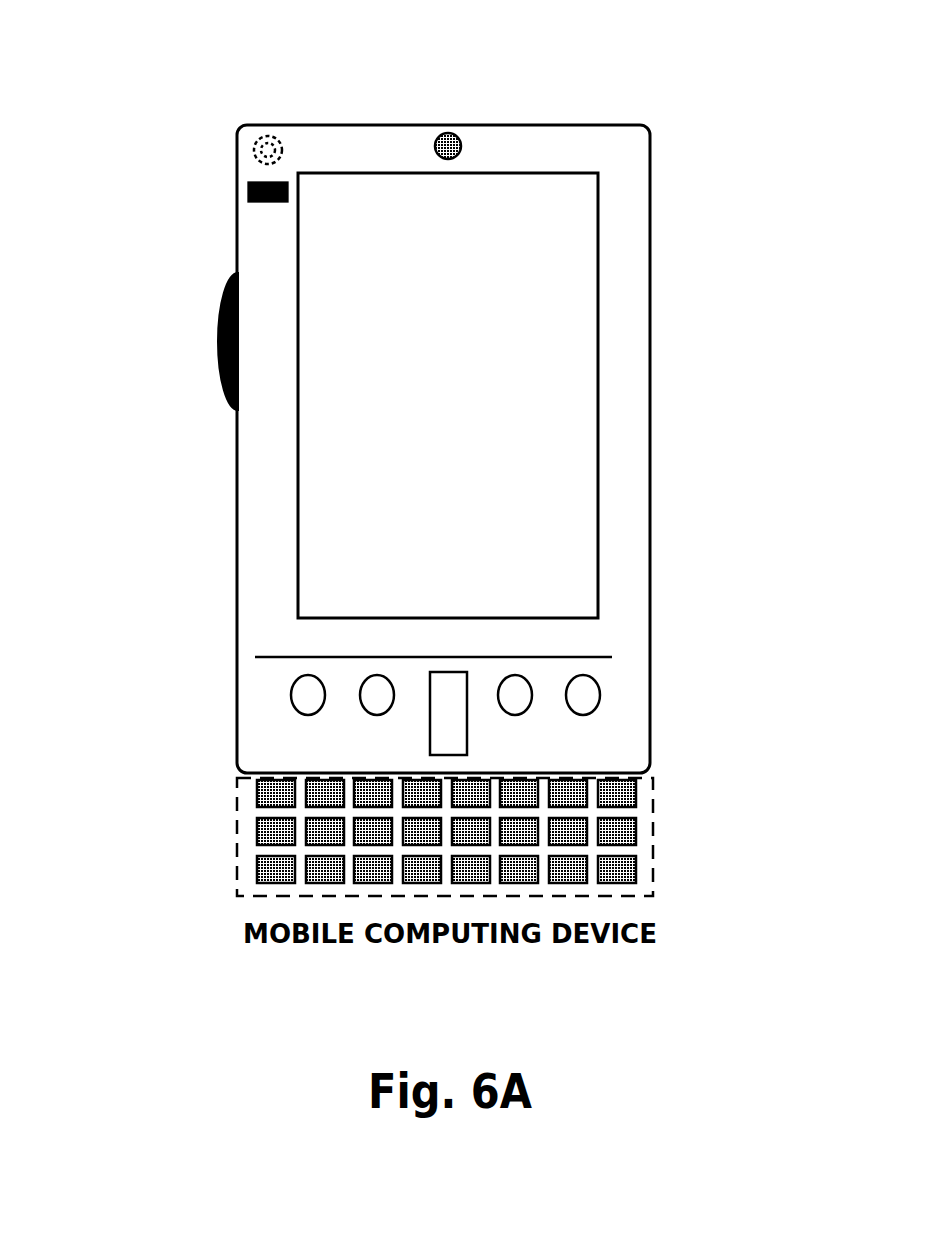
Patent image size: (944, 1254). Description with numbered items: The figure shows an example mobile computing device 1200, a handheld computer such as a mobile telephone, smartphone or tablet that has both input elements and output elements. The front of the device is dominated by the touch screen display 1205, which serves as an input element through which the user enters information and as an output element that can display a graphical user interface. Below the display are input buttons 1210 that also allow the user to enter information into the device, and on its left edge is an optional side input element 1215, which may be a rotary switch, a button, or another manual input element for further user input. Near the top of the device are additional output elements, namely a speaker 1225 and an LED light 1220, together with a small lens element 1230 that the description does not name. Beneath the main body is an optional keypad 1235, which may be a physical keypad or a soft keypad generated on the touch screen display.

The mobile computing device 1200 is at (653, 142).
The touch screen display 1205 is at (323, 556).
The input buttons 1210 is at (583, 709).
The side input element 1215 is at (217, 353).
The LED light 1220 is at (250, 185).
The speaker 1225 is at (253, 141).
The camera 1230 is at (457, 138).
The keypad 1235 is at (237, 865).